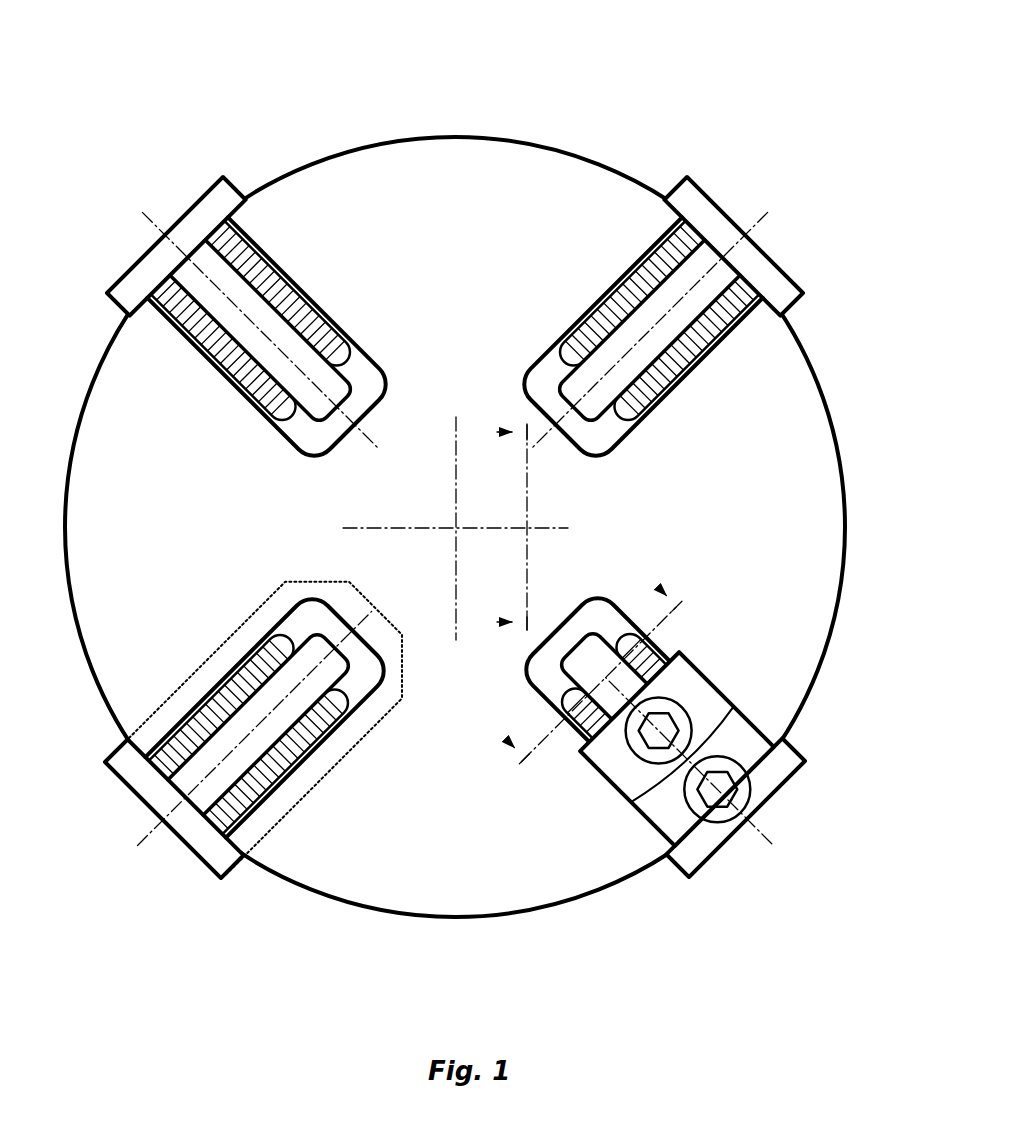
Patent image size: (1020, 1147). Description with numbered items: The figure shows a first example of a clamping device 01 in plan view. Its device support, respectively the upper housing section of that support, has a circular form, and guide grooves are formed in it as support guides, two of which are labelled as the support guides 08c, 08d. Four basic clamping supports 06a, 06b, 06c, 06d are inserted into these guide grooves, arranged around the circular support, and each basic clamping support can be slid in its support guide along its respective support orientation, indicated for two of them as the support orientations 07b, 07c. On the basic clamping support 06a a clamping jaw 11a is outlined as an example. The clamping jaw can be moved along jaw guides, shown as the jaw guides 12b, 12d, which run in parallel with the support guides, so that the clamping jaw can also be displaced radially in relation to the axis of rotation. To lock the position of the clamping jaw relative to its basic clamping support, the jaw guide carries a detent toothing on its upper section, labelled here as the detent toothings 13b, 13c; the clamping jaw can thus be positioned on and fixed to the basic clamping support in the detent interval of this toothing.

The clamping device 01 is at (138, 60).
The basic clamping support 06a is at (700, 882).
The basic clamping support 06b is at (707, 222).
The basic clamping support 06c is at (203, 220).
The basic clamping support 06d is at (197, 845).
The support orientation 07b is at (755, 228).
The support orientation 07c is at (160, 227).
The support guide 08c is at (305, 270).
The support guide 08d is at (310, 800).
The clamping jaw 11a is at (697, 832).
The jaw guide 12b is at (650, 286).
The jaw guide 12d is at (168, 805).
The detent toothing 13b is at (765, 353).
The detent toothing 13c is at (187, 340).